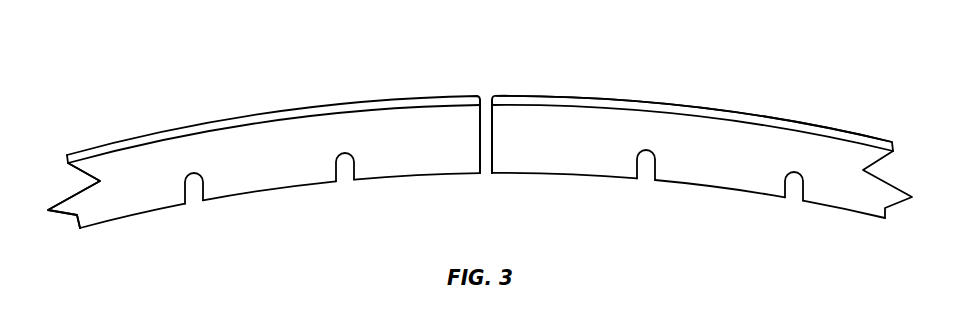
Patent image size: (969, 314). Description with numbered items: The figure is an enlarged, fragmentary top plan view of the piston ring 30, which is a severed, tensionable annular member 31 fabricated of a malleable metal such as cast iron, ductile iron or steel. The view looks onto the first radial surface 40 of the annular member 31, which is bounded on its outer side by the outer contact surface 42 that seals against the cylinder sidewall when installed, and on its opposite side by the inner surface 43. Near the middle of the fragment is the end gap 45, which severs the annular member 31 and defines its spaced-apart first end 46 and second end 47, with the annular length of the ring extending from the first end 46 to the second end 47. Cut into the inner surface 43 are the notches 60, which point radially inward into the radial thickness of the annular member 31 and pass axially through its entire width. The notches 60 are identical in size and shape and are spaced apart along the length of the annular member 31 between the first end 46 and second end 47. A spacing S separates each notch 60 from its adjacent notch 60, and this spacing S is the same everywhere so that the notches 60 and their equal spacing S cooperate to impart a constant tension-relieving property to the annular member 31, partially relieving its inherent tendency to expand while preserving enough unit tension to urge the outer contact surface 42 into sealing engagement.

The piston ring 30 is at (713, 106).
The annular member 31 is at (74, 220).
The first radial surface 40 is at (578, 153).
The outer contact surface 42 is at (606, 98).
The inner surface 43 is at (270, 189).
The end gap 45 is at (489, 131).
The first end 46 is at (492, 162).
The second end 47 is at (490, 148).
The notch 60 is at (191, 184).
The spacing S is at (205, 186).